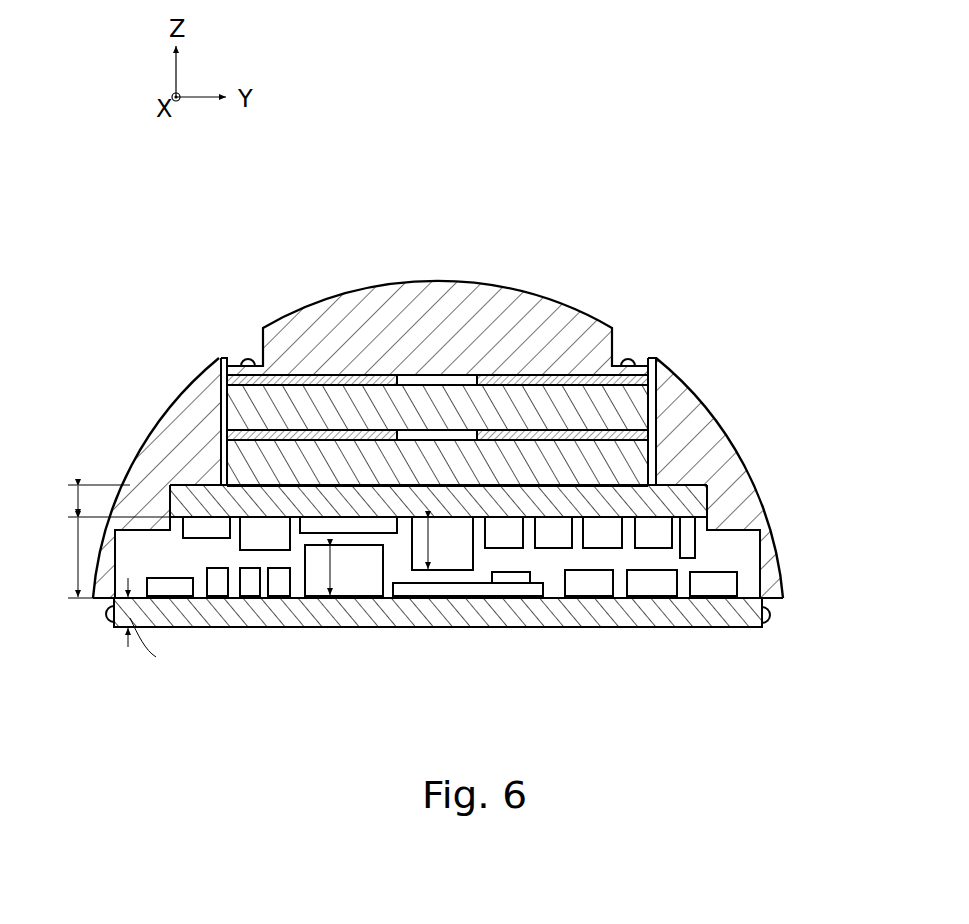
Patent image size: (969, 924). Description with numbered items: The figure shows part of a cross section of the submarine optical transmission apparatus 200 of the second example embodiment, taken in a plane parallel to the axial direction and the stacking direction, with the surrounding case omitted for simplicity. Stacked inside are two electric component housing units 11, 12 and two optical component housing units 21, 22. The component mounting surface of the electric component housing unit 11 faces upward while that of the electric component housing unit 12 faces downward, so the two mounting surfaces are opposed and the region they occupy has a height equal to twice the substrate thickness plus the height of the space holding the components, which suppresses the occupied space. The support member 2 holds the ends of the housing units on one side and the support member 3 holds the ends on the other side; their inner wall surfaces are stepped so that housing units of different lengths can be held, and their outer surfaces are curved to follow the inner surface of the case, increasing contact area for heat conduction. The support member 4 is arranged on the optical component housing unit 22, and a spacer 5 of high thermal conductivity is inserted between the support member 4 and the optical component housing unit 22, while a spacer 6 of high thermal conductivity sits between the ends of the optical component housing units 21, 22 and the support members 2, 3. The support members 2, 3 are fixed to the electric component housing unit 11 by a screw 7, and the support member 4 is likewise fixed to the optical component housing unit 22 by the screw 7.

The submarine optical transmission apparatus 200 is at (437, 148).
The support member 2 is at (158, 433).
The support member 3 is at (775, 568).
The support member 4 is at (466, 294).
The spacer 5 is at (272, 378).
The spacer 6 is at (228, 362).
The screw 7 is at (248, 352).
The electric component housing unit 11 is at (553, 618).
The electric component housing unit 12 is at (752, 476).
The optical component housing unit 21 is at (717, 417).
The optical component housing unit 22 is at (668, 372).